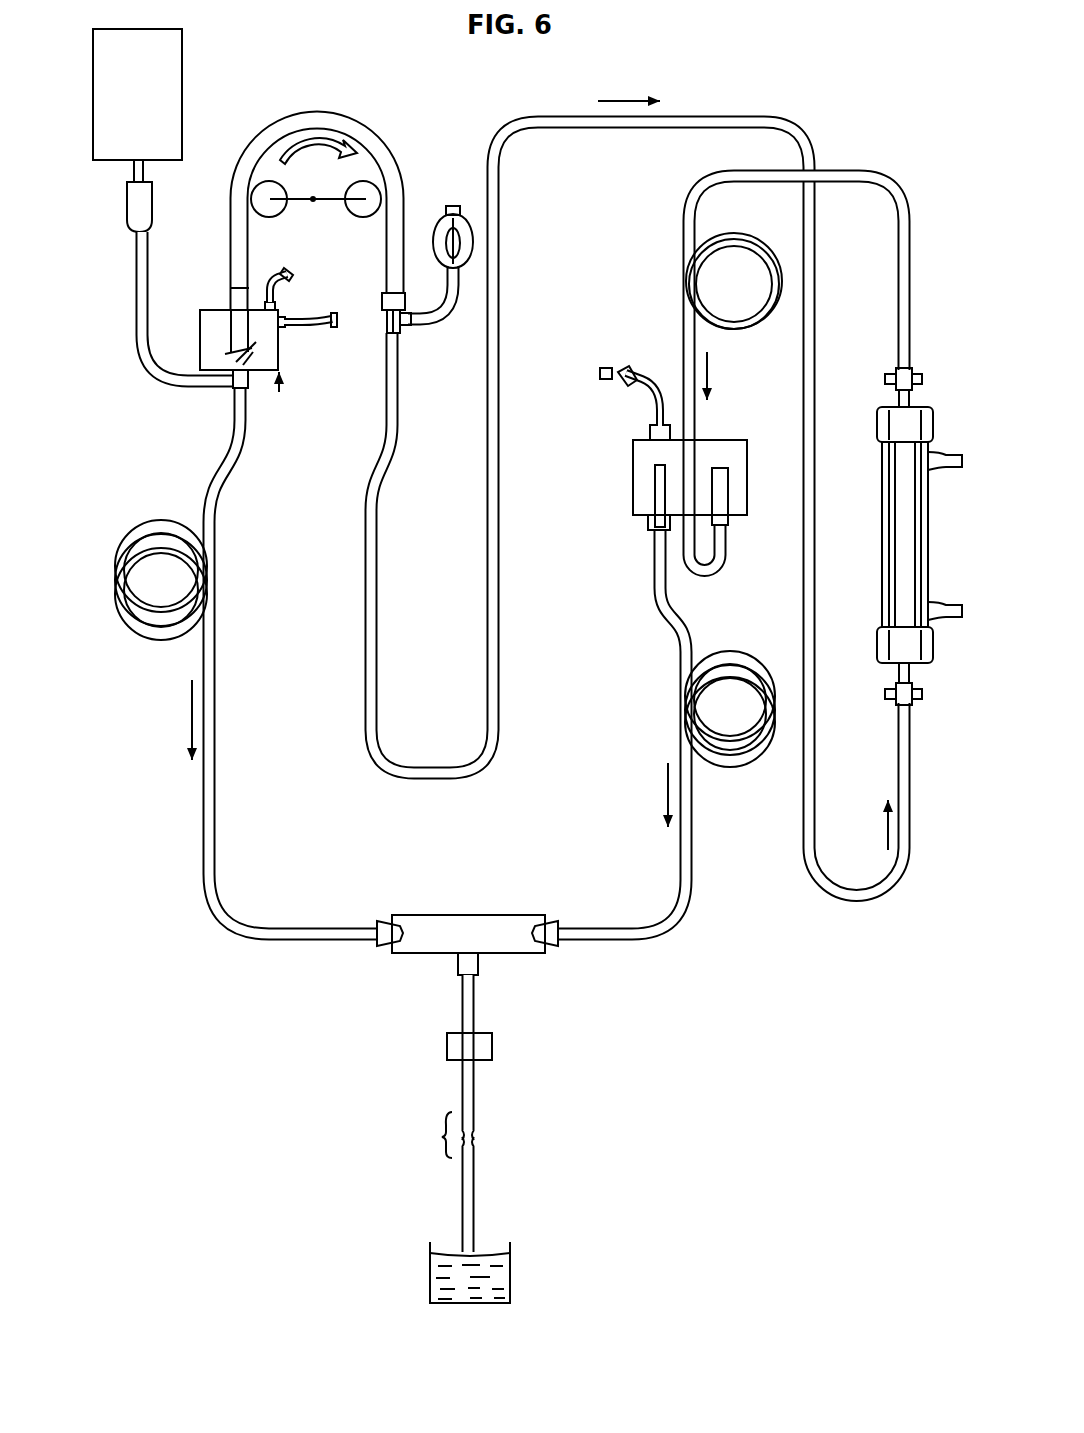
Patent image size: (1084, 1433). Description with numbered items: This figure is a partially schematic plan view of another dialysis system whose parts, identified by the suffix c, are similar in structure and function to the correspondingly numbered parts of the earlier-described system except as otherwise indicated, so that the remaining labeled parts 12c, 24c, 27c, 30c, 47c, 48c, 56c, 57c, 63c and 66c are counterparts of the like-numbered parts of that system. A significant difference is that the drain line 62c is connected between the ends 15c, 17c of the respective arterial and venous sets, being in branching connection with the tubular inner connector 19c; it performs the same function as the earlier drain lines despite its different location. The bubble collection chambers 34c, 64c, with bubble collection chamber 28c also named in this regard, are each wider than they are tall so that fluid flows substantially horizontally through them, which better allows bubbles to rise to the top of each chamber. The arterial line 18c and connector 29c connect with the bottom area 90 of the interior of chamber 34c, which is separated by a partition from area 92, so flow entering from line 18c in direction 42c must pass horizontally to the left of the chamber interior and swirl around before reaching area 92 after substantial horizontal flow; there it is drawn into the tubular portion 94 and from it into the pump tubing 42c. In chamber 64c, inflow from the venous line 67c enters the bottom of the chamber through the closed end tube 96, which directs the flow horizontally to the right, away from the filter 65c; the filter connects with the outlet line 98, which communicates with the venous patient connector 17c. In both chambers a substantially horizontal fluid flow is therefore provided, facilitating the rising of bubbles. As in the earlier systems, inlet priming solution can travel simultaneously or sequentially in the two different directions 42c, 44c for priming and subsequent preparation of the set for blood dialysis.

The dialyzer 12c is at (878, 598).
The end of arterial set 15c is at (388, 932).
The venous patient connector 17c is at (548, 921).
The arterial line 18c is at (225, 470).
The tubular inner connector 19c is at (487, 917).
The injection site 24c is at (443, 215).
The pump segment inlet 27c is at (232, 288).
The bubble collection chamber 28c is at (279, 394).
The connector 29c is at (235, 389).
The blood tubing 30c is at (500, 292).
The bubble collection chamber 34c is at (211, 311).
The pump tubing 42c is at (317, 140).
The priming flow direction 44c is at (195, 714).
The priming solution bag 47c is at (152, 106).
The connector 48c is at (401, 334).
The access port 56c is at (270, 276).
The access port 57c is at (292, 331).
The drain line 62c is at (477, 1112).
The clamp 63c is at (450, 1050).
The bubble collection chamber 64c is at (672, 455).
The filter 65c is at (655, 497).
The collection container 66c is at (511, 1276).
The venous line 67c is at (684, 303).
The bottom area of chamber interior 90 is at (232, 365).
The chamber area 92 is at (249, 372).
The tubular portion 94 is at (222, 340).
The closed end tube 96 is at (722, 470).
The outlet line 98 is at (670, 922).